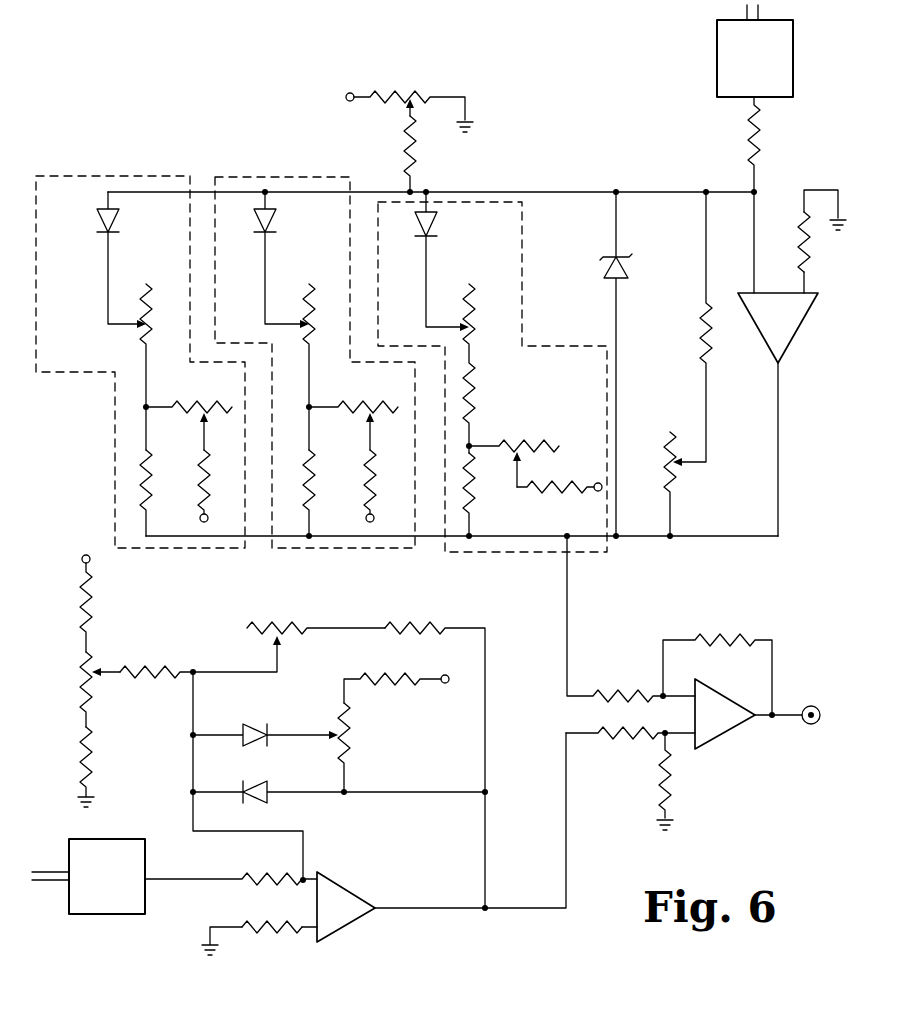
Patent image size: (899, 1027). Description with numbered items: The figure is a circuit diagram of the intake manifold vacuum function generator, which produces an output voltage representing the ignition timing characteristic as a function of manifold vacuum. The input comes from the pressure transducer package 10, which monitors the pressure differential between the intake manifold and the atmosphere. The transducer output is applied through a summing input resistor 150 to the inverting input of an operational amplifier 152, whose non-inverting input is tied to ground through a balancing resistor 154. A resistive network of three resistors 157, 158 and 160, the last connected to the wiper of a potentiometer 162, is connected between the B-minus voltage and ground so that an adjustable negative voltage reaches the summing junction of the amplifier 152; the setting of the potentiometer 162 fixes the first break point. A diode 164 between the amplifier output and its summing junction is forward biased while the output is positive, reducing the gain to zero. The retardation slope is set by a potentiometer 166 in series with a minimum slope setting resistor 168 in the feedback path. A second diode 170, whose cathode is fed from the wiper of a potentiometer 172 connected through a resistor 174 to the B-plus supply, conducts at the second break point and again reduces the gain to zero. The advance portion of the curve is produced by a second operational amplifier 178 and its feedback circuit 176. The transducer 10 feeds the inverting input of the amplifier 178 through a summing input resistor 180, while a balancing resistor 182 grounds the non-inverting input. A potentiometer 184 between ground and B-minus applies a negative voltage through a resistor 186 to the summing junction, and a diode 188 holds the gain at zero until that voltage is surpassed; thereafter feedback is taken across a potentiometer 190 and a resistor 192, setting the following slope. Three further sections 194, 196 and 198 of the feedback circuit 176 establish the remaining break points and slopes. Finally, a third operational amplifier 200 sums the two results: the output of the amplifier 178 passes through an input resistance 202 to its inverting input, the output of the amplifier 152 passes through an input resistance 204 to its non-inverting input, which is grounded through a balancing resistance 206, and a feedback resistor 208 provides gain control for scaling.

The pressure transducer package 10 is at (717, 73).
The summing input resistor 150 is at (260, 873).
The operational amplifier 152 is at (348, 890).
The balancing resistor 154 is at (262, 937).
The resistor 157 is at (80, 605).
The resistor 158 is at (80, 763).
The wiper arm resistor 160 is at (152, 665).
The potentiometer 162 is at (80, 688).
The diode 164 is at (267, 798).
The potentiometer 166 is at (264, 622).
The minimum slope setting resistor 168 is at (412, 622).
The diode 170 is at (252, 722).
The potentiometer 172 is at (350, 752).
The resistor 174 is at (381, 676).
The feedback circuit 176 is at (262, 134).
The second operational amplifier 178 is at (788, 348).
The summing input resistor 180 is at (760, 143).
The balancing resistor 182 is at (810, 250).
The potentiometer 184 is at (405, 96).
The resistor 186 is at (421, 143).
The diode 188 is at (627, 270).
The potentiometer 190 is at (669, 448).
The resistor 192 is at (708, 336).
The feedback circuit section 194 is at (528, 220).
The feedback circuit section 196 is at (272, 177).
The feedback circuit section 198 is at (97, 174).
The third operational amplifier 200 is at (728, 738).
The input resistance 202 is at (612, 690).
The input resistance 204 is at (630, 742).
The balancing resistance 206 is at (673, 783).
The feedback resistor 208 is at (722, 635).